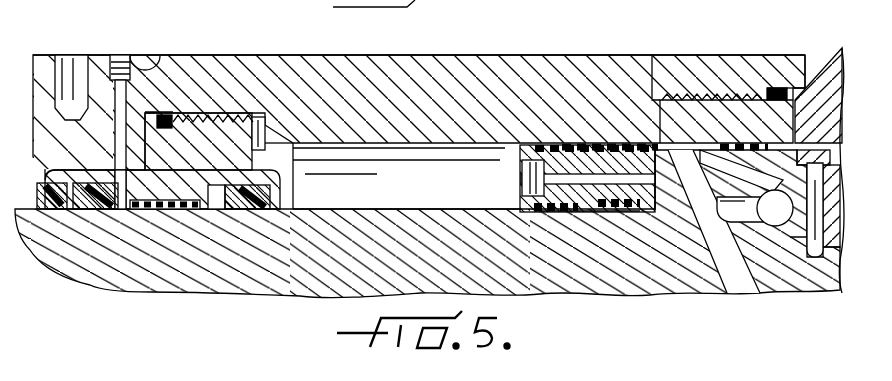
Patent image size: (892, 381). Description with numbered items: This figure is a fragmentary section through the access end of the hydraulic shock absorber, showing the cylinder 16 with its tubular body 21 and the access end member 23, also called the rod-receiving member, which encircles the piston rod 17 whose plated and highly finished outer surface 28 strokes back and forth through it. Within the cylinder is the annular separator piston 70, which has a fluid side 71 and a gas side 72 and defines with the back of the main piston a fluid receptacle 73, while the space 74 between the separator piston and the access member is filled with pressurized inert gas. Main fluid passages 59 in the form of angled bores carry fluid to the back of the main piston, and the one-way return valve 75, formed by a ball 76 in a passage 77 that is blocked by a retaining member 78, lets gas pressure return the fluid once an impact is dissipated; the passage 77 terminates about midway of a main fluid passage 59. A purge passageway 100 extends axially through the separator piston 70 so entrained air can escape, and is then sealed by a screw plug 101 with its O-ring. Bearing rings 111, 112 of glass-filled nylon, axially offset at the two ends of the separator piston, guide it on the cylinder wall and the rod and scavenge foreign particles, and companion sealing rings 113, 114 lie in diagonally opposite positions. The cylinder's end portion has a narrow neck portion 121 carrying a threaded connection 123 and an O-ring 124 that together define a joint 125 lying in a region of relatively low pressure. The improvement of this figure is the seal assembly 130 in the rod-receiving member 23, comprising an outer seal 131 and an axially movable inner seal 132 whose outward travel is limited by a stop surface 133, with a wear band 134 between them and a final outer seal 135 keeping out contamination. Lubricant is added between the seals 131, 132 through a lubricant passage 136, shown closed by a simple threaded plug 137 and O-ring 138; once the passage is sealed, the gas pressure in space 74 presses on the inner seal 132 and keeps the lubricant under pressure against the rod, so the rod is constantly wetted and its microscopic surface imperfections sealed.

The cylinder 16 is at (287, 53).
The piston rod 17 is at (233, 290).
The tubular body 21 is at (553, 70).
The access end member 23 is at (98, 78).
The outer surface 28 is at (462, 206).
The main fluid passages 59 is at (750, 287).
The separator piston 70 is at (587, 144).
The fluid side 71 is at (662, 213).
The gas side 72 is at (520, 160).
The fluid receptacle 73 is at (700, 150).
The space 74 is at (430, 185).
The one-way return valve 75 is at (788, 236).
The ball 76 is at (800, 105).
The passage 77 is at (733, 190).
The retaining member 78 is at (823, 135).
The purge passageway 100 is at (582, 213).
The screw plug 101 is at (520, 184).
The bearing ring 111 is at (623, 143).
The bearing ring 112 is at (557, 213).
The sealing ring 113 is at (557, 143).
The sealing ring 114 is at (618, 213).
The narrow neck portion 121 is at (817, 55).
The threaded connection 123 is at (723, 93).
The O-ring 124 is at (778, 88).
The joint 125 is at (660, 100).
The seal assembly 130 is at (168, 164).
The outer seal 131 is at (97, 212).
The inner seal 132 is at (253, 213).
The stop surface 133 is at (283, 190).
The wear band 134 is at (167, 212).
The final outer seal 135 is at (57, 213).
The lubricant passage 136 is at (117, 124).
The threaded plug 137 is at (122, 62).
The O-ring 138 is at (148, 68).